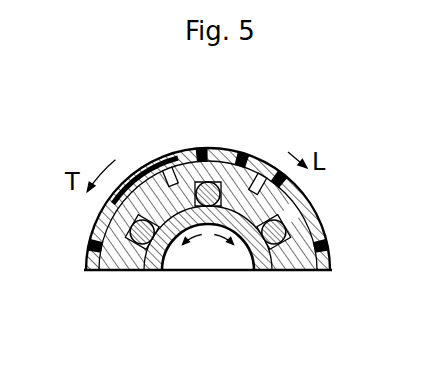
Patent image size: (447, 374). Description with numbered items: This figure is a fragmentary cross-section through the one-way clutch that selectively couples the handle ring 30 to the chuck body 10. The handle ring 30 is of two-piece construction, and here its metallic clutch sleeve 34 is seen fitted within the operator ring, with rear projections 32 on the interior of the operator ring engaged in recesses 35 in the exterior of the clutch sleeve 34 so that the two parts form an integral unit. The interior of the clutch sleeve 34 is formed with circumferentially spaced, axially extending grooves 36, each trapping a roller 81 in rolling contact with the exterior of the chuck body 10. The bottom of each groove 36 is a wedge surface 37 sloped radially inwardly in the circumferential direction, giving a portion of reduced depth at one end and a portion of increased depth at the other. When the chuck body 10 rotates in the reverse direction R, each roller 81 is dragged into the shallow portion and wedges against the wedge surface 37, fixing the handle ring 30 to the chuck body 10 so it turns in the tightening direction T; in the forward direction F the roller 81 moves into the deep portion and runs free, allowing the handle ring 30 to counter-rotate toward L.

The chuck body 10 is at (153, 265).
The handle ring 30 is at (143, 158).
The rear projections 32 is at (262, 177).
The clutch sleeve 34 is at (287, 263).
The recesses 35 is at (165, 175).
The grooves 36 is at (130, 272).
The wedge surface 37 is at (235, 168).
The rollers 81 is at (208, 182).